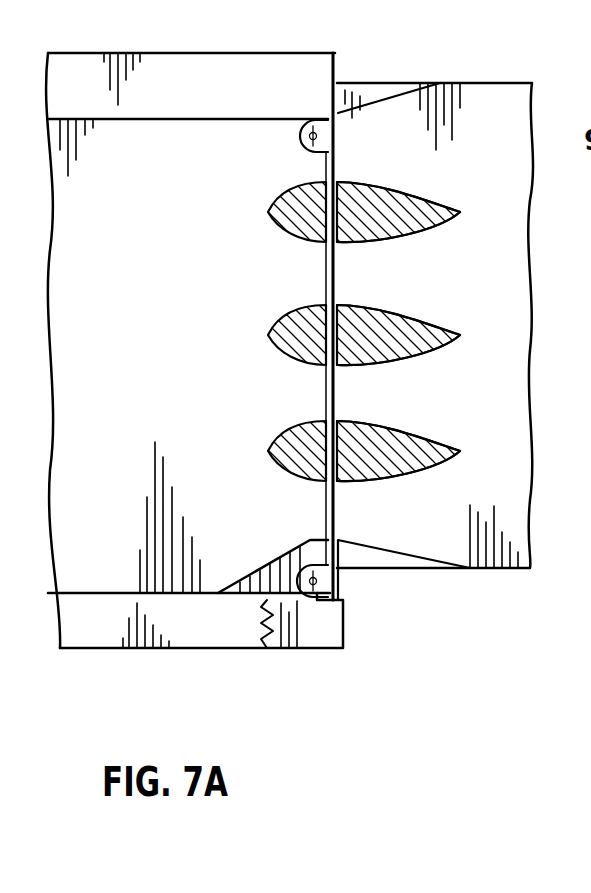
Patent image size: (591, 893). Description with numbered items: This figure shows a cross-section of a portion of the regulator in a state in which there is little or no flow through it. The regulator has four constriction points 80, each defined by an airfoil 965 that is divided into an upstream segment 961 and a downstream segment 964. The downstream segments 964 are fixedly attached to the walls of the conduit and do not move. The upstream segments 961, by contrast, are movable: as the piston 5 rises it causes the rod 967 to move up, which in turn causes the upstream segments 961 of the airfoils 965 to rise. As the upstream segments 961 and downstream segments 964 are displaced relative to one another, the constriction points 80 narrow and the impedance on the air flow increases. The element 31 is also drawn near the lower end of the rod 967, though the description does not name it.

The piston 5 is at (121, 593).
The hinge pin 31 is at (327, 605).
The constriction point 80 is at (403, 160).
The upstream segment 961 is at (268, 212).
The downstream segment 964 is at (458, 212).
The airfoil 965 is at (480, 200).
The rod 967 is at (326, 500).